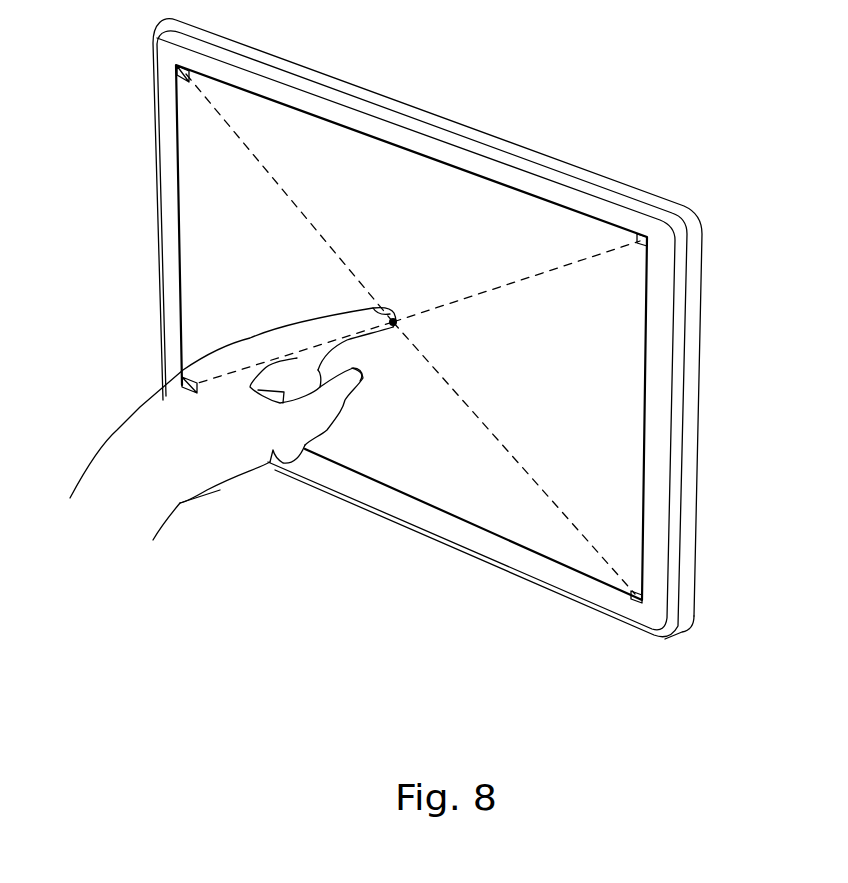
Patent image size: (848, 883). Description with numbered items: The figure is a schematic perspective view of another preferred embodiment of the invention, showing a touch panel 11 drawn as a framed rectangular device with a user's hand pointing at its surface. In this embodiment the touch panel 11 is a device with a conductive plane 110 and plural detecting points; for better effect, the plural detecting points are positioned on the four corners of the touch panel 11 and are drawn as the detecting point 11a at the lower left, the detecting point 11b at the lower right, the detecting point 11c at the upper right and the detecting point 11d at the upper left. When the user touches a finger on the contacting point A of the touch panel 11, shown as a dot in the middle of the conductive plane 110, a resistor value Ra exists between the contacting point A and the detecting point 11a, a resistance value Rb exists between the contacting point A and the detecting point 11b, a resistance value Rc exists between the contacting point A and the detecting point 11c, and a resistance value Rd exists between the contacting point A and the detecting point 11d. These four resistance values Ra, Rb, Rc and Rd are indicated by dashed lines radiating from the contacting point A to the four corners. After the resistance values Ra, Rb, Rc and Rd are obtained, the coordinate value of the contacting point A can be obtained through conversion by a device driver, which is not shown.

The touch panel 11 is at (197, 230).
The conductive plane 110 is at (411, 332).
The detecting point 11a is at (178, 383).
The detecting point 11b is at (643, 603).
The detecting point 11c is at (648, 246).
The detecting point 11d is at (177, 67).
The contacting point A is at (400, 303).
The resistor value Ra is at (294, 353).
The resistance value Rb is at (514, 458).
The resistance value Rc is at (516, 281).
The resistance value Rd is at (289, 198).